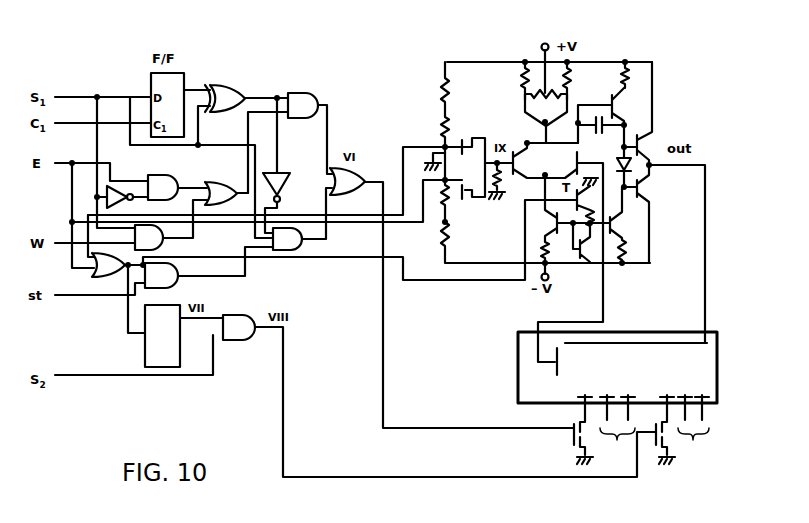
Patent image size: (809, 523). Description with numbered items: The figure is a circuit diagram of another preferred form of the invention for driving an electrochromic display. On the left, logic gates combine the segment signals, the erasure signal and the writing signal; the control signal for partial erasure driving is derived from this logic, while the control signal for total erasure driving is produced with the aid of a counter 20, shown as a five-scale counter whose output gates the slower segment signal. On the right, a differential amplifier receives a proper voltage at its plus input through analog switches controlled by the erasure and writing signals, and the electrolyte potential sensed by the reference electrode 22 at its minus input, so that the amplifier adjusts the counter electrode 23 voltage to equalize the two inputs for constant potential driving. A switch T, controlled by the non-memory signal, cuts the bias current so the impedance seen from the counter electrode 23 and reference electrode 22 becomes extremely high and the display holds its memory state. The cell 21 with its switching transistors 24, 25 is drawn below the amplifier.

The counter 20 is at (165, 358).
The liquid crystal display cell 21 is at (518, 341).
The reference electrode 22 is at (555, 368).
The counter electrode 23 is at (640, 343).
The switching transistor 24 is at (593, 442).
The switching transistor 25 is at (676, 442).